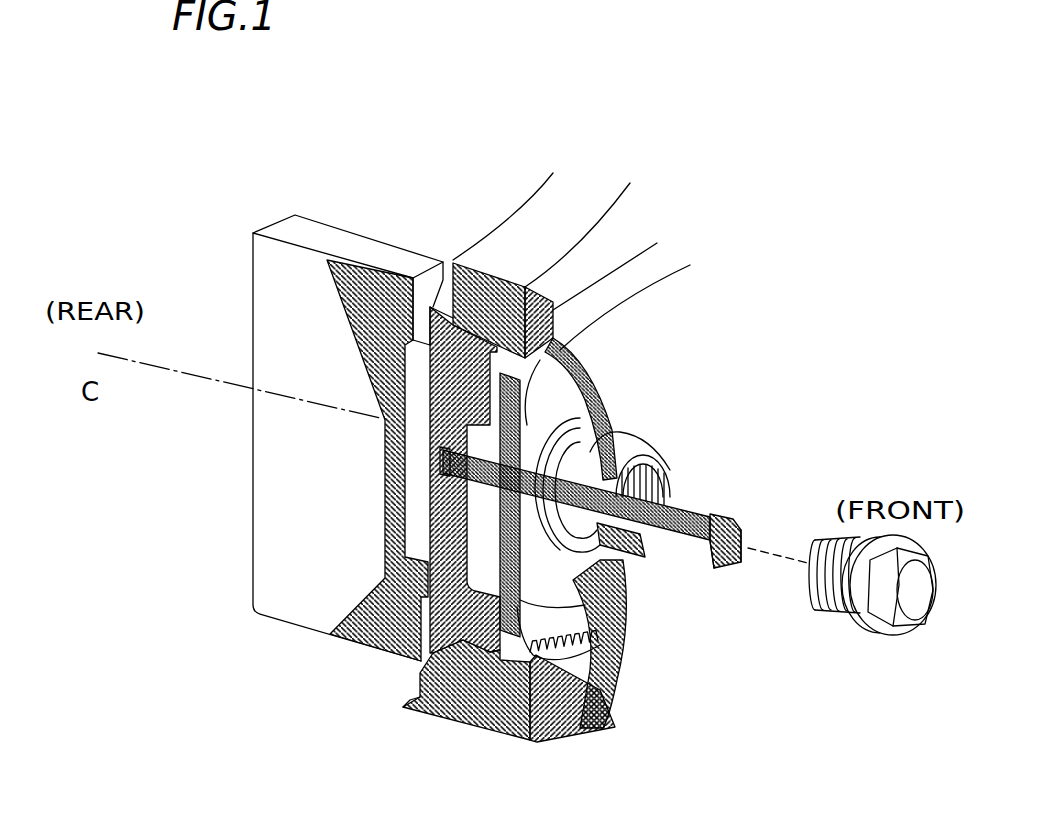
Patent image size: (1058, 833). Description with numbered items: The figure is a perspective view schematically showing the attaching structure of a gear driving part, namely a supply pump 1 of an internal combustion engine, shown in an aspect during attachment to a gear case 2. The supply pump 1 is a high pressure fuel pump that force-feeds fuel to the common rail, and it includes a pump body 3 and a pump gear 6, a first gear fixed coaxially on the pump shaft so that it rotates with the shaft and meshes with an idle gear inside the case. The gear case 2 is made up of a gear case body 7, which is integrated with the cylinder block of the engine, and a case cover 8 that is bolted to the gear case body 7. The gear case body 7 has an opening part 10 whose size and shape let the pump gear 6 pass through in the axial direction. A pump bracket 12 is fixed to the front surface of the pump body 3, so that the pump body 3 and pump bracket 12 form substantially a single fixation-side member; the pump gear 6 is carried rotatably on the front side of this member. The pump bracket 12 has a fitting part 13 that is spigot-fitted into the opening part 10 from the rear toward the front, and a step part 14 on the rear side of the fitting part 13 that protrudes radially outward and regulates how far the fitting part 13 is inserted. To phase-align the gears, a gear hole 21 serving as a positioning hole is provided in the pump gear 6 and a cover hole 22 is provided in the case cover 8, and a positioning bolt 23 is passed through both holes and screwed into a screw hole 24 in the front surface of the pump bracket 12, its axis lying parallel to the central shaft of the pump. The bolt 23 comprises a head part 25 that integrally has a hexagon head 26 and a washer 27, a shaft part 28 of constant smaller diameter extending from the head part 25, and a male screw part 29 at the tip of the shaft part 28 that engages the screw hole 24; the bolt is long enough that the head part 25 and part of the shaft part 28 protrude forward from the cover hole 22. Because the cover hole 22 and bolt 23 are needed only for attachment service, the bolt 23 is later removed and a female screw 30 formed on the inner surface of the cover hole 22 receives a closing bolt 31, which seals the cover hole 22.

The supply pump 1 is at (305, 228).
The gear case 2 is at (748, 313).
The pump body 3 is at (288, 277).
The pump gear 6 is at (583, 625).
The gear case body 7 is at (530, 243).
The case cover 8 is at (653, 293).
The opening part 10 is at (473, 295).
The pump bracket 12 is at (400, 527).
The fitting part 13 is at (475, 668).
The step part 14 is at (423, 680).
The gear hole 21 is at (580, 430).
The cover hole 22 is at (685, 545).
The positioning bolt 23 is at (617, 437).
The screw hole 24 is at (390, 380).
The head part 25 is at (730, 517).
The hexagon head 26 is at (738, 552).
The washer 27 is at (712, 565).
The shaft part 28 is at (597, 440).
The male screw part 29 is at (430, 502).
The female screw 30 is at (618, 560).
The closing bolt 31 is at (880, 623).